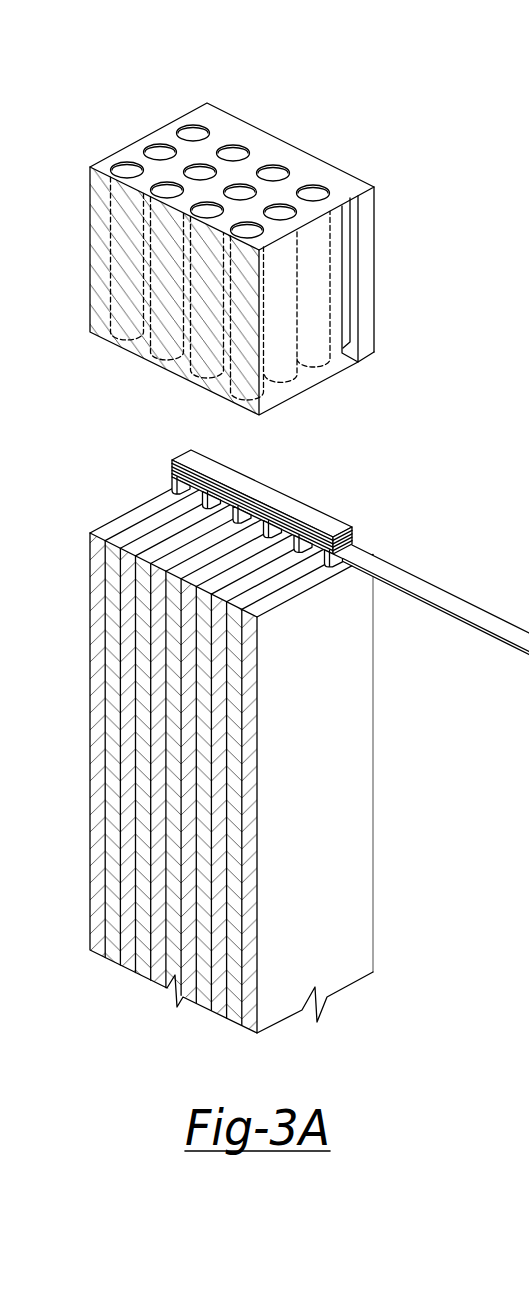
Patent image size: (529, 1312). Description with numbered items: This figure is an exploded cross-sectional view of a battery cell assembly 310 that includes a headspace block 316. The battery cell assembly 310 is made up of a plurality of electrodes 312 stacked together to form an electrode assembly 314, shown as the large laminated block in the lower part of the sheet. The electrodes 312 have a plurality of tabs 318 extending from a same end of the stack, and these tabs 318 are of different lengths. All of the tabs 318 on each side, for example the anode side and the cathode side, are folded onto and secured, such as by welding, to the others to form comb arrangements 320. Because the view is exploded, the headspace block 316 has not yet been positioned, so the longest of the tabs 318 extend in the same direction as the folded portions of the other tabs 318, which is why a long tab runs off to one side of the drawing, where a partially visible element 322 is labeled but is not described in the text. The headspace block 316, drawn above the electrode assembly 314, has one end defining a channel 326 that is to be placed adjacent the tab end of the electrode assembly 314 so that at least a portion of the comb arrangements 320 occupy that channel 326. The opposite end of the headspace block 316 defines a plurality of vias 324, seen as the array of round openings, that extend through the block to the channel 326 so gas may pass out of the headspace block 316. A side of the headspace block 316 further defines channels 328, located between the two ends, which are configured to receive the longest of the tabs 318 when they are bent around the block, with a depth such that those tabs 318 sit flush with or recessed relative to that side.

The battery cell assembly 310 is at (84, 104).
The electrodes 312 is at (237, 767).
The electrode assembly 314 is at (242, 1046).
The headspace block 316 is at (312, 153).
The tabs 318 is at (176, 492).
The comb arrangements 320 is at (296, 452).
The terminal tab 322 is at (436, 666).
The vias 324 is at (191, 133).
The channel 326 is at (350, 360).
The channels 328 is at (357, 268).